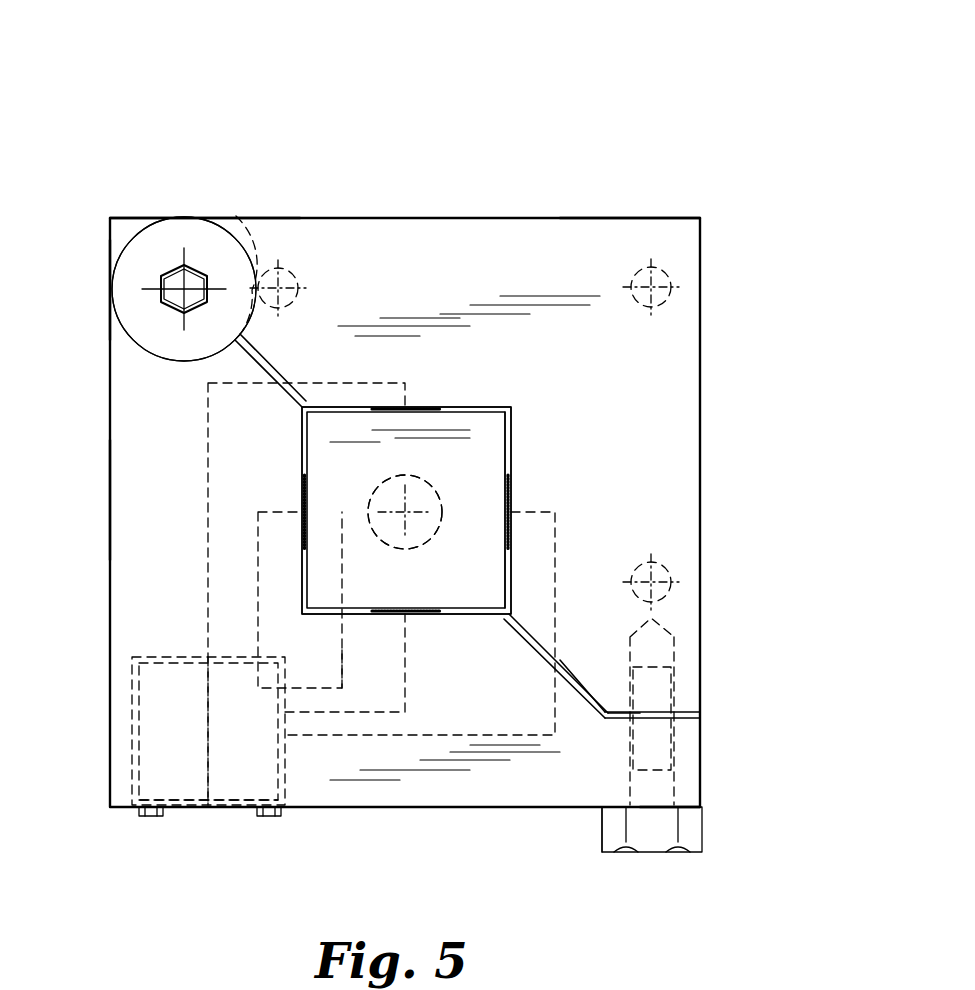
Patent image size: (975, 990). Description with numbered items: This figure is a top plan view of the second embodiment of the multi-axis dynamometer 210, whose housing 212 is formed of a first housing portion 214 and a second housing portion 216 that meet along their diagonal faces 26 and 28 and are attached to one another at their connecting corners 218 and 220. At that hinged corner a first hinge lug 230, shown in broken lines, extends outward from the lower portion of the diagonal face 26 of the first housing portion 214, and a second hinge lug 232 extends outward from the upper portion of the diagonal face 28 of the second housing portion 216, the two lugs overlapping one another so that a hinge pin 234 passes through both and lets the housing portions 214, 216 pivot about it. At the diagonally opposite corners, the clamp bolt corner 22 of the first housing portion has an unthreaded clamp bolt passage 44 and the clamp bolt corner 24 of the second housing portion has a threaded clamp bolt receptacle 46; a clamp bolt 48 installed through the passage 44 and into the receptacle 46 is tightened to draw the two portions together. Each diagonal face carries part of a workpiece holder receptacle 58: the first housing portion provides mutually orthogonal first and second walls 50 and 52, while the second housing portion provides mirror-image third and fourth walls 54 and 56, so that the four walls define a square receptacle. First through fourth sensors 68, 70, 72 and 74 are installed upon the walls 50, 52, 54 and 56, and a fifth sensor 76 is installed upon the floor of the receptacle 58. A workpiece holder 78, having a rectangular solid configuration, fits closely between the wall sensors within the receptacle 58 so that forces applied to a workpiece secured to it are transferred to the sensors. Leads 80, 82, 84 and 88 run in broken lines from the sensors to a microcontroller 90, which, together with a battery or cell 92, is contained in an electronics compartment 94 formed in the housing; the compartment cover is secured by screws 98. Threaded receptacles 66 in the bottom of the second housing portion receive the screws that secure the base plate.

The multi-axis dynamometer 210 is at (98, 93).
The housing 212 is at (446, 180).
The first housing portion 214 is at (110, 497).
The second housing portion 216 is at (575, 218).
The corner of plate 218 is at (110, 290).
The pivot boss 220 is at (180, 218).
The first hinge lug 230 is at (236, 216).
The second hinge lug 232 is at (118, 250).
The hinge pin 234 is at (170, 266).
The receptacles 66 is at (300, 290).
The workpiece holder receptacle 58 is at (355, 407).
The third wall 54 is at (470, 412).
The fourth wall 56 is at (505, 450).
The third sensor 72 is at (420, 407).
The second sensor 70 is at (420, 614).
The first sensor 68 is at (302, 505).
The fourth sensor 74 is at (511, 495).
The workpiece holder 78 is at (417, 502).
The fifth sensor 76 is at (437, 530).
The first wall 50 is at (307, 450).
The second wall 52 is at (478, 617).
The clamp bolt corner 24 is at (610, 716).
The diagonal face 26 is at (586, 695).
The diagonal face 28 is at (600, 720).
The lead 84 is at (208, 555).
The lead 80 is at (258, 580).
The lead 82 is at (377, 712).
The lead 88 is at (342, 658).
The electronics compartment 94 is at (132, 672).
The battery or cell 92 is at (132, 748).
The microcontroller 90 is at (240, 806).
The screws 98 is at (147, 816).
The clamp bolt receptacle 46 is at (674, 648).
The clamp bolt 48 is at (650, 852).
The clamp bolt passage 44 is at (602, 808).
The clamp bolt corner 22 is at (700, 807).